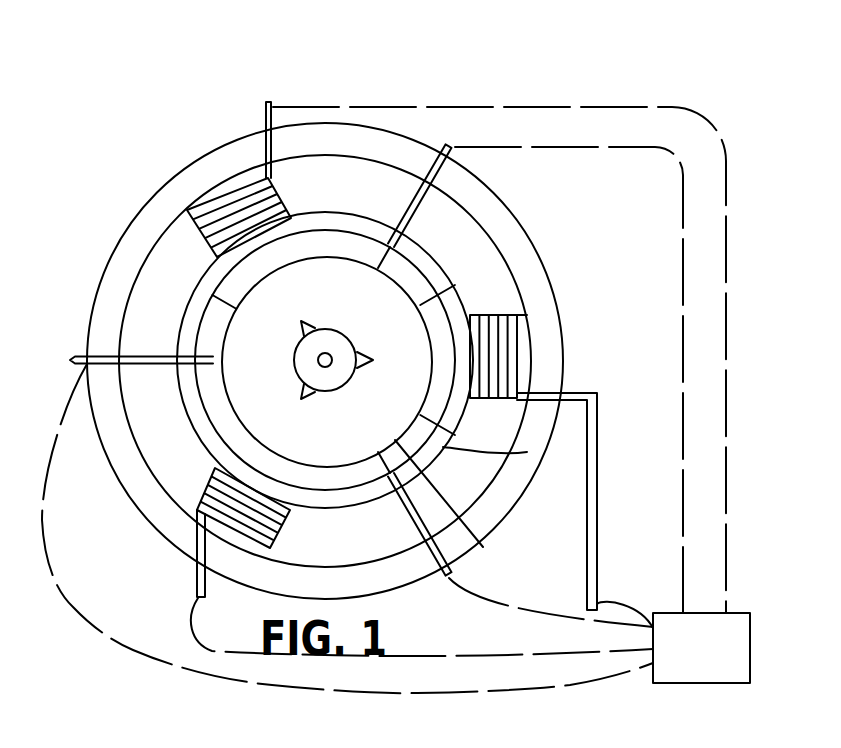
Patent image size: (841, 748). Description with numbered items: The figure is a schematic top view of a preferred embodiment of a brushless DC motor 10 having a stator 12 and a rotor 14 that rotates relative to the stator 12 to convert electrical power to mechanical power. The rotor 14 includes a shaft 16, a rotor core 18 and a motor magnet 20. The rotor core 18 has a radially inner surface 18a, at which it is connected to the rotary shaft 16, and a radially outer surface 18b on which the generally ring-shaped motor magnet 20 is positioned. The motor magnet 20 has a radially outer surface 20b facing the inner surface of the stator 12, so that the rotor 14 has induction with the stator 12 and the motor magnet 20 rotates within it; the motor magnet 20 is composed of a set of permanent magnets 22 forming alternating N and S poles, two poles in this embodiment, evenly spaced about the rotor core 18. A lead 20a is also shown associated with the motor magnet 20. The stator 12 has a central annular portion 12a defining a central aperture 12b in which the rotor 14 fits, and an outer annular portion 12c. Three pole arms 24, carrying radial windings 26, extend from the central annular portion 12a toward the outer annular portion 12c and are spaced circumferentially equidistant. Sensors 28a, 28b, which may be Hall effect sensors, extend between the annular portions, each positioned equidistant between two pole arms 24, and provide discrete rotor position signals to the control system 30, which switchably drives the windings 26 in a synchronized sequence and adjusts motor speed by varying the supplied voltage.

The BLDC motor 10 is at (664, 92).
The stator 12 is at (508, 240).
The central annular portion 12a is at (187, 387).
The central aperture 12b is at (320, 267).
The outer annular portion 12c is at (176, 172).
The rotor 14 is at (407, 330).
The shaft 16 is at (327, 343).
The rotor core 18 is at (290, 265).
The radially inner surface 18a is at (292, 360).
The radially outer surface 18b is at (222, 338).
The motor magnet 20 is at (217, 393).
The pole lead 20a is at (483, 547).
The radially outer surface 20b is at (527, 452).
The permanent magnets 22 is at (233, 280).
The pole arms 24 is at (228, 187).
The radial windings 26 is at (618, 378).
The sensor 28a is at (452, 142).
The sensor 28b is at (449, 580).
The control system 30 is at (701, 648).